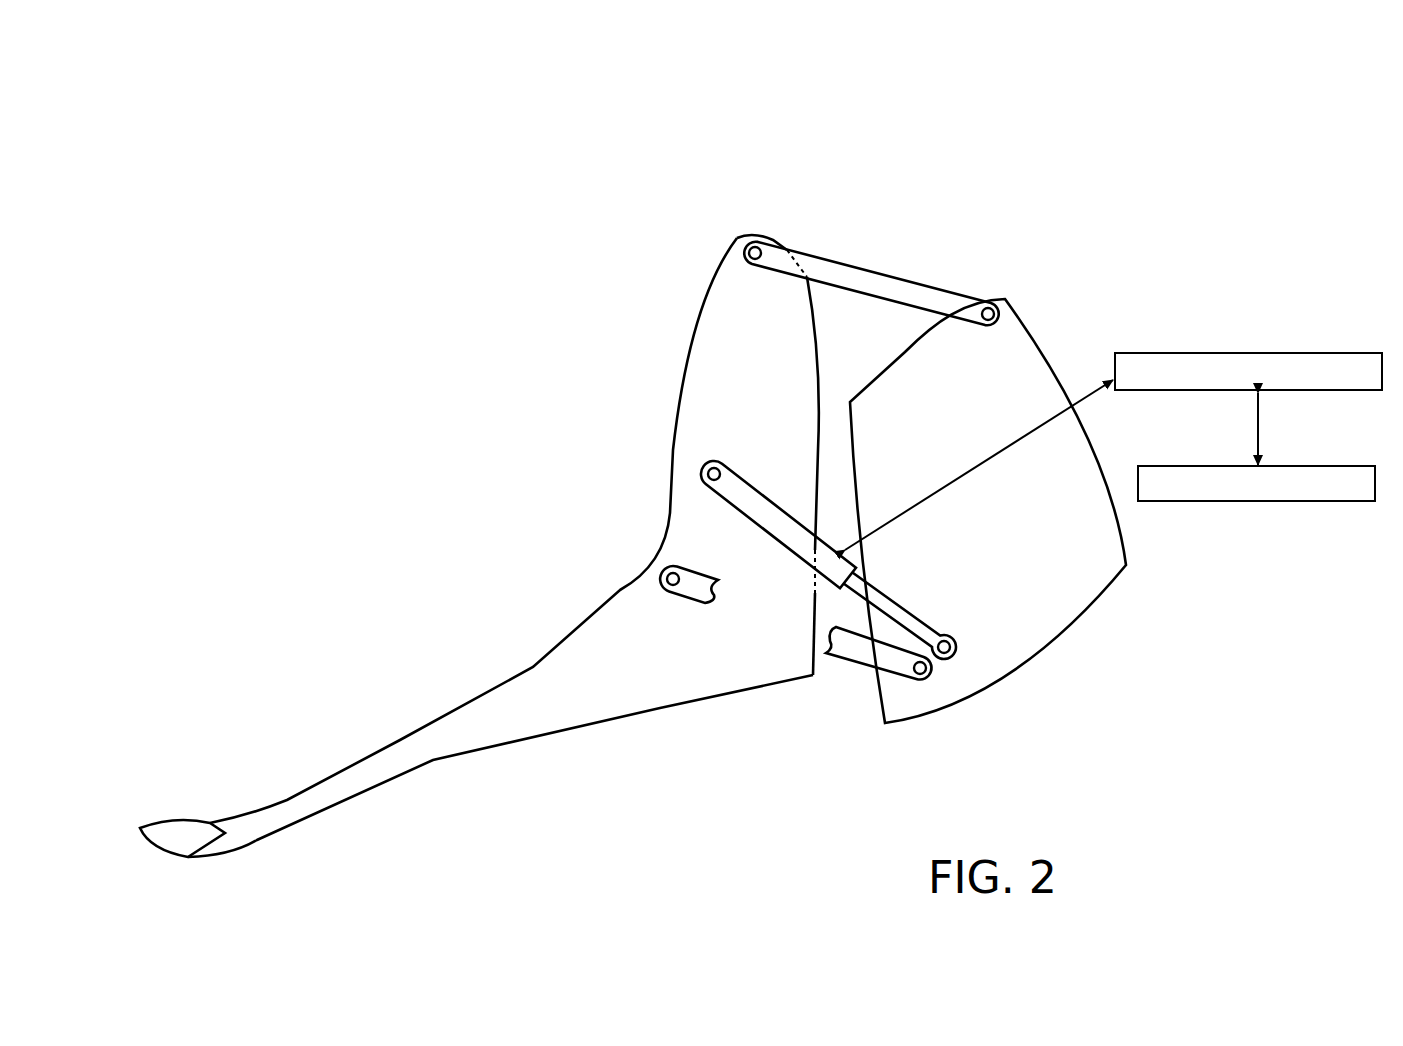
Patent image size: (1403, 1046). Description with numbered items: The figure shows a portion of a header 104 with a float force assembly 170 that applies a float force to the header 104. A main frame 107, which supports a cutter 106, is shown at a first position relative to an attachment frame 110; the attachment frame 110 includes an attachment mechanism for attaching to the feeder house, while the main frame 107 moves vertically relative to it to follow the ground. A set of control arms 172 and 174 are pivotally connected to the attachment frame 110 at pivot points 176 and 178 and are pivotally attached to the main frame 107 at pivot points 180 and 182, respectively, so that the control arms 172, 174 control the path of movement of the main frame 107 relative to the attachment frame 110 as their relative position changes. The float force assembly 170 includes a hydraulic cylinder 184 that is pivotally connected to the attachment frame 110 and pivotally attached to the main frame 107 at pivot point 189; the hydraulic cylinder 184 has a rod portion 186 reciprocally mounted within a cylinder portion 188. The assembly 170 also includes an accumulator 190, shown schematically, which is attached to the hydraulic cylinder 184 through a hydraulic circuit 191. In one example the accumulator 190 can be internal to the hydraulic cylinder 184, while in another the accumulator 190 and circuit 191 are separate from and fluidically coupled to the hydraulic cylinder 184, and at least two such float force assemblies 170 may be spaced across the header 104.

The header 104 is at (657, 180).
The cutter 106 is at (168, 820).
The main frame 107 is at (567, 733).
The attachment frame 110 is at (1128, 563).
The float force assembly 170 is at (1026, 246).
The control arm 172 is at (880, 270).
The control arm 174 is at (862, 662).
The pivot point 176 is at (1004, 299).
The pivot point 178 is at (700, 468).
The pivot point 180 is at (760, 237).
The pivot point 182 is at (660, 587).
The hydraulic cylinder 184 is at (813, 543).
The rod portion 186 is at (918, 612).
The cylinder portion 188 is at (732, 508).
The pivot point 189 is at (950, 637).
The accumulator 190 is at (1256, 483).
The hydraulic circuit 191 is at (1113, 451).